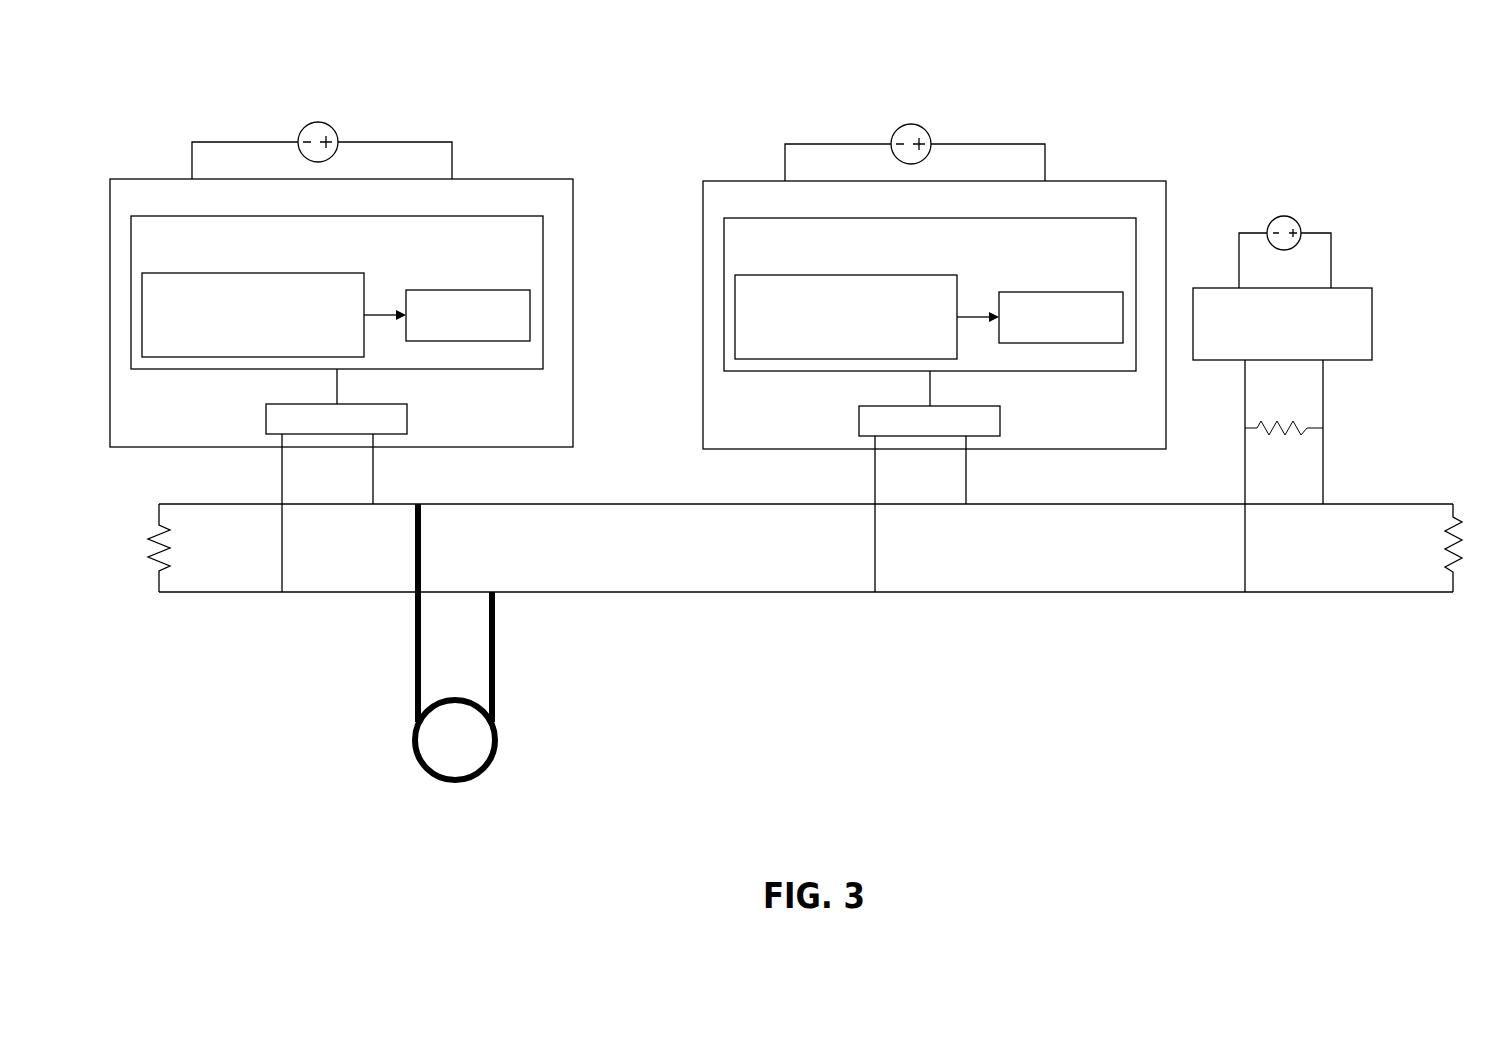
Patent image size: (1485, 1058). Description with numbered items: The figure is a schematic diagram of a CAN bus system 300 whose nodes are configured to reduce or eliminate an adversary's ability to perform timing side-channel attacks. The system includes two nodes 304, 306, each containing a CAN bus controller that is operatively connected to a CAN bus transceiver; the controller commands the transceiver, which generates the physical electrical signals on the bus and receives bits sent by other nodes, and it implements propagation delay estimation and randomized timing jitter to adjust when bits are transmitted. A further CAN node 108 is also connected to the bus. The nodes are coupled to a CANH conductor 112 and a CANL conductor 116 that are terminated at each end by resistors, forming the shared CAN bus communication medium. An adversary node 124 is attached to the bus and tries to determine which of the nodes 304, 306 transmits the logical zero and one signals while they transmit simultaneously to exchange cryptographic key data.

The CAN bus system 300 is at (170, 99).
The node 304 is at (487, 177).
The node 306 is at (934, 346).
The CAN node 108 is at (1343, 288).
The CANH conductor 112 is at (543, 502).
The CANL conductor 116 is at (550, 590).
The adversary node 124 is at (485, 765).